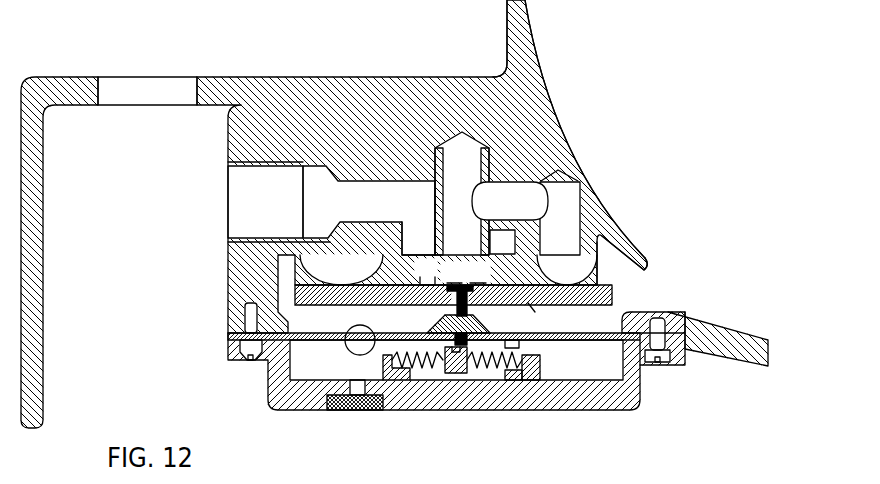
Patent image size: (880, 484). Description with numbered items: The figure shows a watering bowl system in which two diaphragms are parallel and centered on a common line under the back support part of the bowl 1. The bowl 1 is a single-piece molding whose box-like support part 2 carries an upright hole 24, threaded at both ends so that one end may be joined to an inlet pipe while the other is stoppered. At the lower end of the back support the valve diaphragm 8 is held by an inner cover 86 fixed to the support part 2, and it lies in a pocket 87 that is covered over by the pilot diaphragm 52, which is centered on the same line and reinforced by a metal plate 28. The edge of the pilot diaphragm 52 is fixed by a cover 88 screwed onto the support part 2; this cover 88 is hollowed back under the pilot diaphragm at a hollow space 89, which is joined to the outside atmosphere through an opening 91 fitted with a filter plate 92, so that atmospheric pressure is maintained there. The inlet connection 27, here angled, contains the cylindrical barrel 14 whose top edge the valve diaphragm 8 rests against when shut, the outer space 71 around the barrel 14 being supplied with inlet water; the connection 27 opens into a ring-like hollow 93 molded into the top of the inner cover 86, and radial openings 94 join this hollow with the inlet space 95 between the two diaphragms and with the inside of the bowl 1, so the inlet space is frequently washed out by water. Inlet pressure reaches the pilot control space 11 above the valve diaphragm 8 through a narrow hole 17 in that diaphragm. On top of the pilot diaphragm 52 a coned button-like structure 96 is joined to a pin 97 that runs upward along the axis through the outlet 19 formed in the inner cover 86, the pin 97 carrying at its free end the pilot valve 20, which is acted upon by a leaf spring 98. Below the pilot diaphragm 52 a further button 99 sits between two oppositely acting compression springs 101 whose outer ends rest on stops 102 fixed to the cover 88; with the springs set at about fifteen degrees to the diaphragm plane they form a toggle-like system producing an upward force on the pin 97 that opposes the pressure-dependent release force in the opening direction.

The bowl 1 is at (528, 25).
The support part 2 is at (358, 77).
The valve diaphragm 8 is at (462, 256).
The pilot control space 11 is at (478, 274).
The cylindrical barrel 14 is at (435, 198).
The narrow hole 17 is at (420, 256).
The outlet 19 is at (470, 312).
The pilot valve 20 is at (453, 274).
The upright hole 24 is at (248, 216).
The inlet connection 27 is at (497, 214).
The metal plate 28 is at (360, 332).
The pilot diaphragm 52 is at (341, 293).
The outer space 71 is at (502, 242).
The inner cover 86 is at (541, 317).
The pocket 87 is at (378, 331).
The cover 88 is at (287, 405).
The hollow space 89 is at (304, 375).
The opening 91 is at (357, 385).
The filter plate 92 is at (373, 410).
The ring-like hollow 93 is at (553, 285).
The radial openings 94 is at (608, 278).
The inlet space 95 is at (552, 333).
The coned button-like structure 96 is at (519, 341).
The pin 97 is at (456, 312).
The leaf spring 98 is at (426, 271).
The button 99 is at (419, 368).
The compression springs 101 is at (493, 367).
The stops 102 is at (540, 380).